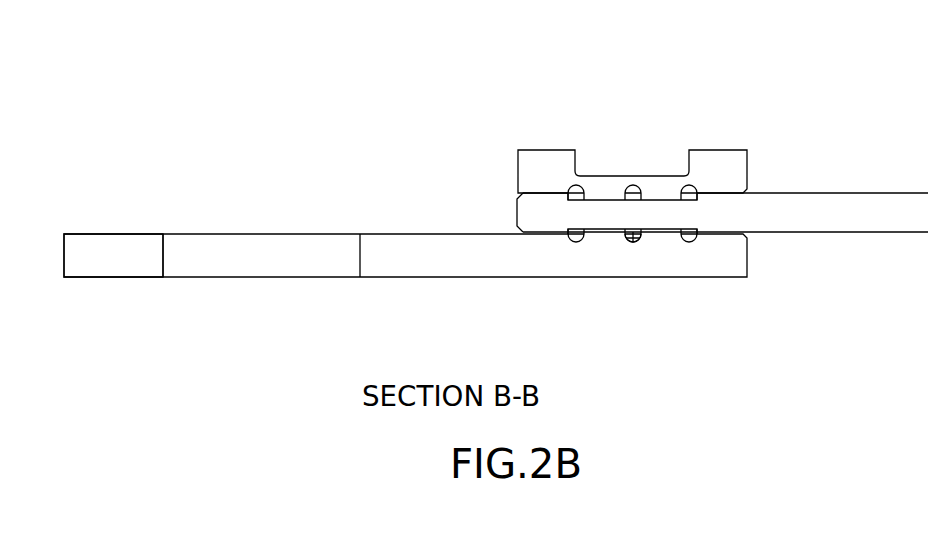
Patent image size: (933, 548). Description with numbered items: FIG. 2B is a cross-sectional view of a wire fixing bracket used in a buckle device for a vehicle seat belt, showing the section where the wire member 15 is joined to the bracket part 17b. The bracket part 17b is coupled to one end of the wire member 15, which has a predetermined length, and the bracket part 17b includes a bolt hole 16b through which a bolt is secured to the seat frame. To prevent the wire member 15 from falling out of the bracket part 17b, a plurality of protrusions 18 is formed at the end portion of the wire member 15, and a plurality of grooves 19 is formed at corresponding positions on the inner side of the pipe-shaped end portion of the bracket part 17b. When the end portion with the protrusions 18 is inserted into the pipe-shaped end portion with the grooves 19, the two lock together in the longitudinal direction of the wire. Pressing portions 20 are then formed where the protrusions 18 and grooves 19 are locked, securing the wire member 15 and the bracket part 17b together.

The wire member 15 is at (826, 203).
The bolt hole 16b is at (163, 253).
The bracket part 17b is at (97, 245).
The protrusions 18 is at (637, 235).
The grooves 19 is at (630, 233).
The pressing portions 20 is at (608, 175).